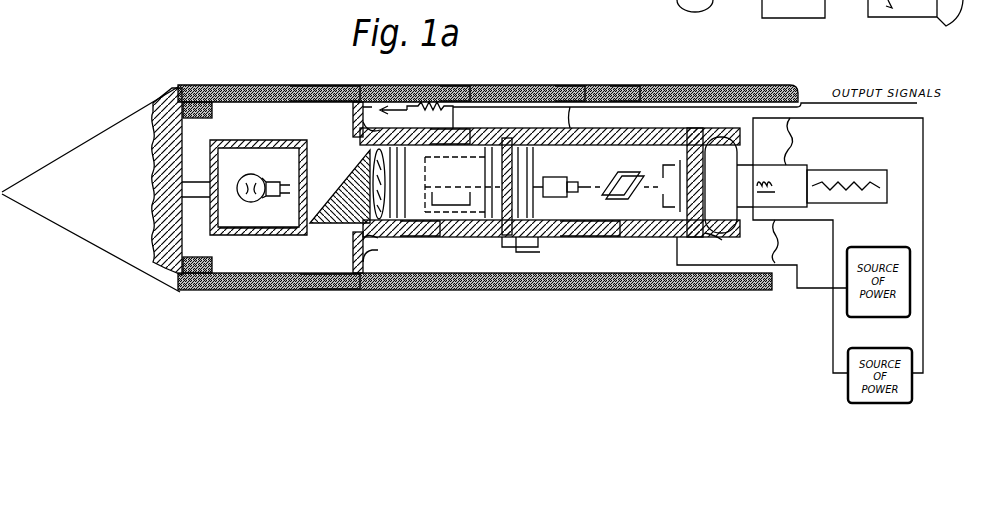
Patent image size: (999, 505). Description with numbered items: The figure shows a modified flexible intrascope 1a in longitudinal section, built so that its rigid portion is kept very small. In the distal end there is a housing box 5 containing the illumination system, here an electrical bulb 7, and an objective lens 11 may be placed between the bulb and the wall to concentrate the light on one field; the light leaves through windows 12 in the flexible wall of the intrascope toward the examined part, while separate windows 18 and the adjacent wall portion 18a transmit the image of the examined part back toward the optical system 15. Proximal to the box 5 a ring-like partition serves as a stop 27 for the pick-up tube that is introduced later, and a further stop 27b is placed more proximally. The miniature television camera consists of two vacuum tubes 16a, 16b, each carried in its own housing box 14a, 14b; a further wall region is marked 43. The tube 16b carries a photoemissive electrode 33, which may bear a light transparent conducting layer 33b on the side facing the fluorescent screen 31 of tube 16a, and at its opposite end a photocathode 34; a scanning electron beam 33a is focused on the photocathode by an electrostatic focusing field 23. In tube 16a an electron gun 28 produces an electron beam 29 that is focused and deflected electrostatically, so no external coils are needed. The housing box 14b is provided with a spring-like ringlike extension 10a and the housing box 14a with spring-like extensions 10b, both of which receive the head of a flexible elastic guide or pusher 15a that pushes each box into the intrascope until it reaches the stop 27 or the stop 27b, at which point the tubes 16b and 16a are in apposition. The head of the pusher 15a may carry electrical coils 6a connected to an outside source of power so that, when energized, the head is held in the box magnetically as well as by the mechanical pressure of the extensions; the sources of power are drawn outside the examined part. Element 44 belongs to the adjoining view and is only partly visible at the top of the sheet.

The flexible intrascope 1a is at (206, 88).
The housing box 5 is at (286, 140).
The electrical bulb 7 is at (244, 177).
The objective lens 11 is at (244, 238).
The windows 12 is at (256, 292).
The windows 18 is at (334, 292).
The housing wall section 18a is at (342, 86).
The housing box 14a is at (566, 86).
The housing box 14b is at (458, 86).
The housing wall conductor 43 is at (628, 86).
The stop 27 is at (352, 126).
The stop 27b is at (504, 128).
The optical system 15 is at (370, 160).
The flexible elastic guide 15a is at (800, 145).
The photoemissive electrode 33 is at (484, 176).
The scanning electron beam 33a is at (412, 238).
The light transparent conducting layer 33b is at (460, 128).
The electrostatic focusing field 23 is at (458, 210).
The photocathode 34 is at (378, 251).
The vacuum tube 16a is at (590, 238).
The vacuum tube 16b is at (462, 238).
The fluorescent screen 31 is at (546, 176).
The electron beam 29 is at (612, 174).
The electron gun 28 is at (682, 130).
The ringlike extension 10a is at (540, 250).
The spring-like extensions 10b is at (722, 240).
The electrical coils 6a is at (768, 187).
The element of adjacent figure 44 is at (690, 10).